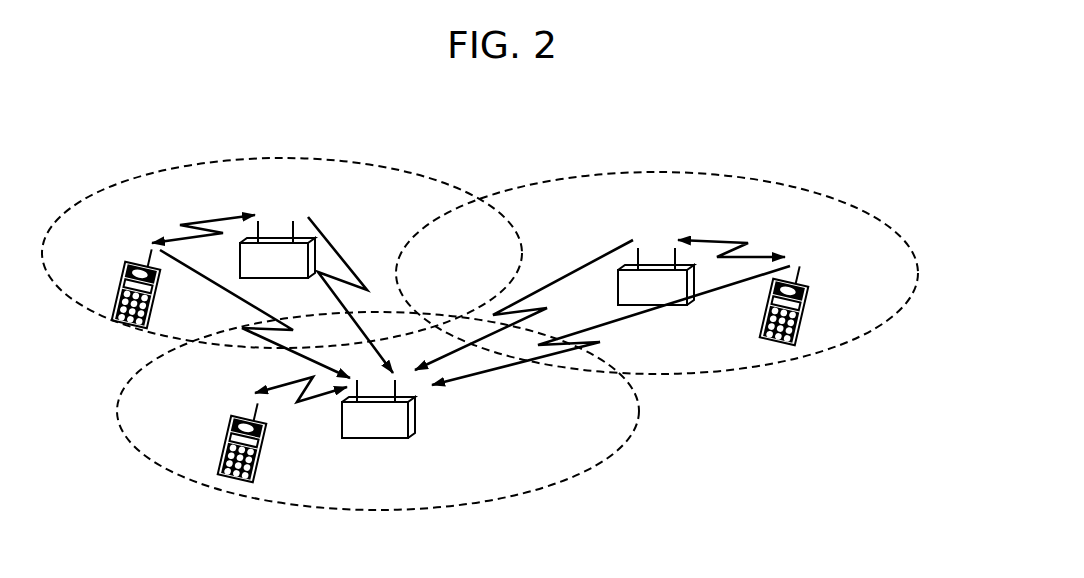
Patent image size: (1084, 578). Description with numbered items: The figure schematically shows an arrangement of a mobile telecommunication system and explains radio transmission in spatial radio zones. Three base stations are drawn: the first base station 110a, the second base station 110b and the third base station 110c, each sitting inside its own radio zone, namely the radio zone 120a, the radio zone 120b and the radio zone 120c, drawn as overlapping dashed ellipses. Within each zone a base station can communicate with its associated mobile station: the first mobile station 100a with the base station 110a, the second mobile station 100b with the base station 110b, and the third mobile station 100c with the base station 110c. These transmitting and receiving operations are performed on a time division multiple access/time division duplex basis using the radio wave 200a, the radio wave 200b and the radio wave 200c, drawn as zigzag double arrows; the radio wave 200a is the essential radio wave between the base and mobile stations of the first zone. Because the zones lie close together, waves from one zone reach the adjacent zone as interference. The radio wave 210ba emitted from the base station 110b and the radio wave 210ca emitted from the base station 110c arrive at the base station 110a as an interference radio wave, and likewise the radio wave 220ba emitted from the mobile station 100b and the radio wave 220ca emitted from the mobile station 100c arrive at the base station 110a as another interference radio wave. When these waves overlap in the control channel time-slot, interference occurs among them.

The mobile station 100a is at (253, 480).
The mobile station 100b is at (794, 338).
The mobile station 100c is at (120, 265).
The base station 110a is at (387, 438).
The base station 110b is at (618, 283).
The base station 110c is at (280, 240).
The radio zone 120a is at (585, 472).
The radio zone 120b is at (716, 172).
The radio zone 120c is at (157, 170).
The radio wave 200a is at (300, 400).
The radio wave 200b is at (729, 242).
The radio wave 200c is at (178, 238).
The radio wave 210ba is at (548, 283).
The radio wave 210ca is at (358, 252).
The radio wave 220ba is at (632, 307).
The radio wave 220ca is at (187, 270).